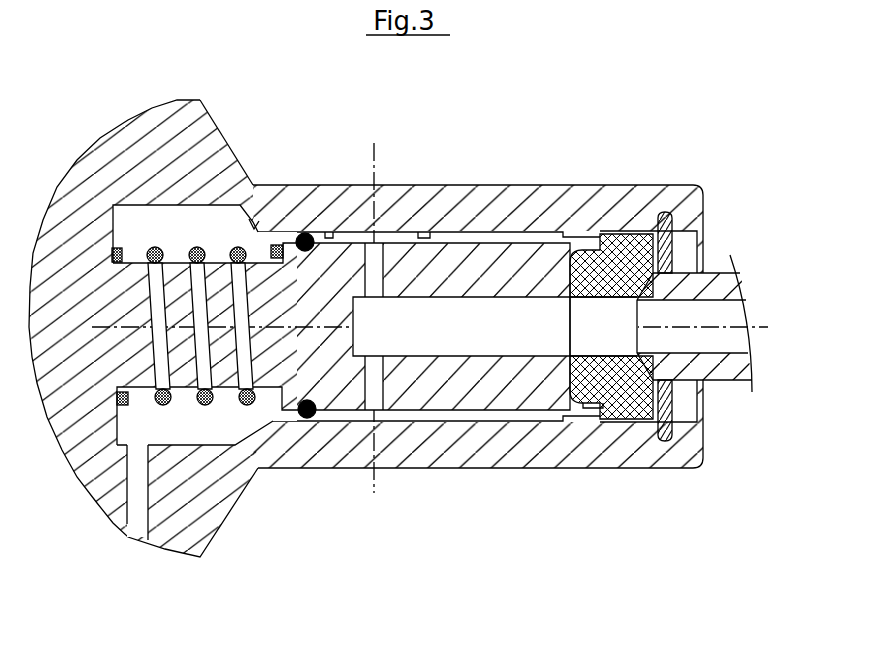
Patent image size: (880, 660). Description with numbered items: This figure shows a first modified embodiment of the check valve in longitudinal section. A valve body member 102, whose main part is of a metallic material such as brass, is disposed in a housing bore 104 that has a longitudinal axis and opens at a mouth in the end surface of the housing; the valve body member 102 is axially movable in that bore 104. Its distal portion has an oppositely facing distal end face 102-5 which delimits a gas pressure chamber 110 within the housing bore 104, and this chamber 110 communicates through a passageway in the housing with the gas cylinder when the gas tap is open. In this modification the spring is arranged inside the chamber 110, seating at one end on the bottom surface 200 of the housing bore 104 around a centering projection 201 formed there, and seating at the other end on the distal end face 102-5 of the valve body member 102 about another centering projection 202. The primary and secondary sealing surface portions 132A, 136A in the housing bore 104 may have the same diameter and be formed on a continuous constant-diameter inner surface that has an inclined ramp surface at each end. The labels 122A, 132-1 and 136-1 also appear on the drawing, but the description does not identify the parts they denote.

The valve body member 102 is at (430, 397).
The distal end face 102-5 is at (225, 370).
The housing bore 104 is at (430, 232).
The gas pressure chamber 110 is at (207, 462).
The spring 122A is at (197, 305).
The groove 132-1 is at (257, 221).
The primary sealing surface portion 132A is at (332, 232).
The retaining ring 136-1 is at (706, 413).
The secondary sealing surface portion 136A is at (600, 402).
The bottom surface 200 is at (113, 227).
The centering projection 201 is at (137, 367).
The centering projection 202 is at (290, 412).